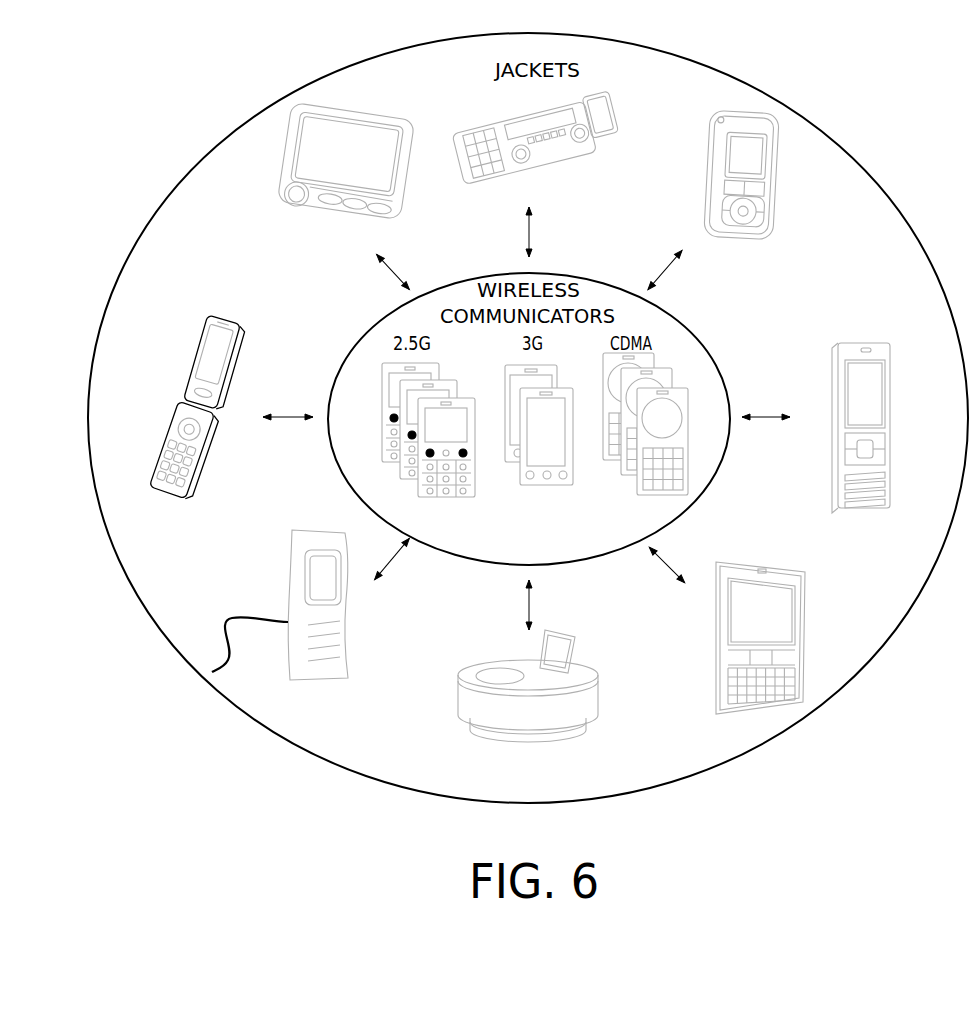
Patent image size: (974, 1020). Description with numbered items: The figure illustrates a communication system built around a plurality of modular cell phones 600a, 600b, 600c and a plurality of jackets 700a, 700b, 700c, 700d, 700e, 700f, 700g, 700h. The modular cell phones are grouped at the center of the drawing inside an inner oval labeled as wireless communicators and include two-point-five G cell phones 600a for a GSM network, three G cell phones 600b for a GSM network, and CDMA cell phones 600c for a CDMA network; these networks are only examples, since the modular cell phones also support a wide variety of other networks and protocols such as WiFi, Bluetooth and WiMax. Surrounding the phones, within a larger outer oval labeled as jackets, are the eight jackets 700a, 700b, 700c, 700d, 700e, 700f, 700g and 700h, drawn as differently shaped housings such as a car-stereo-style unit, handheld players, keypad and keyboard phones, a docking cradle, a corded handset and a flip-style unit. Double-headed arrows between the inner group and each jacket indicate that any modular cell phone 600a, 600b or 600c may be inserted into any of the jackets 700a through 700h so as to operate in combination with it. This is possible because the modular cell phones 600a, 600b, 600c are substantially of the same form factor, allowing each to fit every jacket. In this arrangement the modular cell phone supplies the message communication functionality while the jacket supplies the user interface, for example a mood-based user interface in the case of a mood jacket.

The jacket 700a is at (593, 147).
The jacket 700b is at (780, 213).
The jacket 700c is at (897, 408).
The jacket 700d is at (810, 598).
The jacket 700e is at (582, 648).
The jacket 700f is at (352, 612).
The jacket 700g is at (240, 357).
The jacket 700h is at (408, 213).
The modular cell phone 600a is at (465, 500).
The modular cell phone 600b is at (537, 490).
The modular cell phone 600c is at (618, 480).